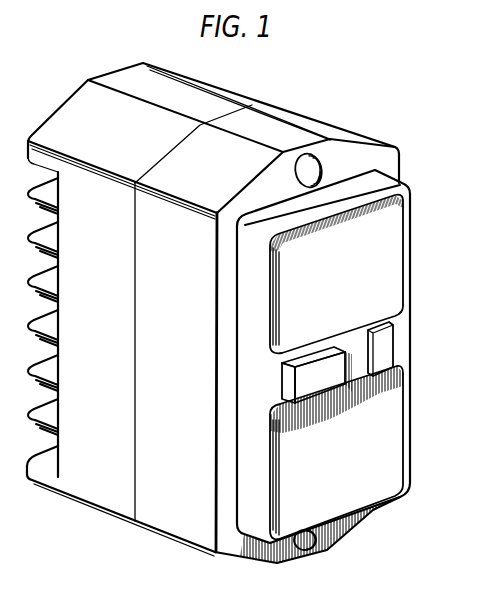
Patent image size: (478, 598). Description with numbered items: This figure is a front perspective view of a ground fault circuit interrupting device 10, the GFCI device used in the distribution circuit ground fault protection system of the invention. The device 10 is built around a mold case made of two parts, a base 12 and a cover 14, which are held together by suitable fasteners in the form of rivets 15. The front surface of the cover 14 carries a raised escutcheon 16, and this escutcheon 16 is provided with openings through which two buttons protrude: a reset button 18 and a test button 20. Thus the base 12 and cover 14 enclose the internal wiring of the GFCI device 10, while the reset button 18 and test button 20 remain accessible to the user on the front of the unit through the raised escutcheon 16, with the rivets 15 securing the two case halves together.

The ground fault circuit interrupting device 10 is at (347, 101).
The base 12 is at (100, 495).
The cover 14 is at (182, 517).
The rivets 15 is at (295, 180).
The raised escutcheon 16 is at (257, 518).
The reset button 18 is at (311, 389).
The test button 20 is at (387, 347).